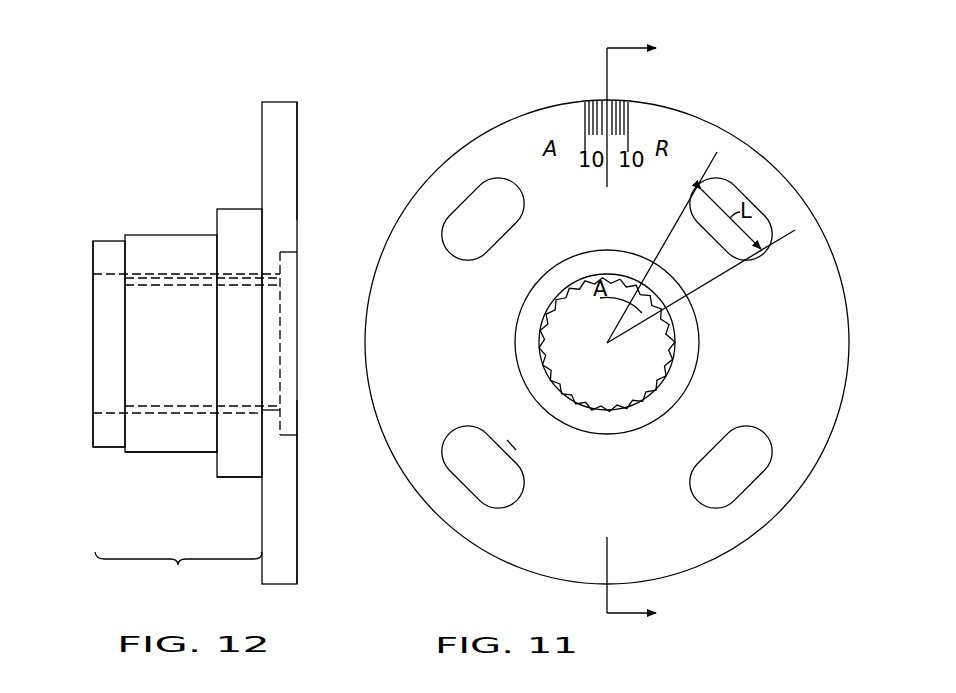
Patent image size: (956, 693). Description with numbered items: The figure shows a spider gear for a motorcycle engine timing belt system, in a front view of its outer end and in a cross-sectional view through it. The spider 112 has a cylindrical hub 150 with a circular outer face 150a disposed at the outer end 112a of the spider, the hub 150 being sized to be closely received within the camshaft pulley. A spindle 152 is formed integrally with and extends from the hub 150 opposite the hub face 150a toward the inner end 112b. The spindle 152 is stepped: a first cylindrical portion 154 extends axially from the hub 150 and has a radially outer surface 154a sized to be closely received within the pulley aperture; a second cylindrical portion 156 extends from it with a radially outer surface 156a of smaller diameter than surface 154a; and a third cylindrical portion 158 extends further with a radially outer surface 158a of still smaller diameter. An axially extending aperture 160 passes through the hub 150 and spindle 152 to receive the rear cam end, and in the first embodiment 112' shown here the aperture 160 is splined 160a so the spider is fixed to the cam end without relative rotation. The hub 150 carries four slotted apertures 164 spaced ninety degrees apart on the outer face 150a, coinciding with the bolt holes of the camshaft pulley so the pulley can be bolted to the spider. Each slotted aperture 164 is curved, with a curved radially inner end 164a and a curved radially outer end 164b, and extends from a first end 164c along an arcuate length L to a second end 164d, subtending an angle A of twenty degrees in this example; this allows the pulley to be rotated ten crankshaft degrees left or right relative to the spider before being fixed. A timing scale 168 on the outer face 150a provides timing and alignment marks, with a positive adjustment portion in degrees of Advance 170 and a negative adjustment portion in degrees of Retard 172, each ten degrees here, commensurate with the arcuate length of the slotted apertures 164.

In FIG. 12, the spider 112 is at (105, 89).
In FIG. 12, the outer end of the spider 112a is at (297, 102).
In FIG. 12, the inner end of the spider 112b is at (95, 240).
In FIG. 11, the first embodiment of the spider gear 112' is at (607, 333).
In FIG. 12, the cylindrical hub 150 is at (275, 101).
In FIG. 12, the circular outer face 150a is at (298, 530).
In FIG. 11, the circular outer face 150a is at (465, 338).
In FIG. 12, the spindle 152 is at (178, 574).
In FIG. 12, the first cylindrical portion 154 is at (240, 208).
In FIG. 12, the radially outer surface of the first cylindrical portion 154a is at (242, 478).
In FIG. 12, the second cylindrical portion 156 is at (177, 234).
In FIG. 12, the radially outer surface of the second cylindrical portion 156a is at (188, 453).
In FIG. 12, the third cylindrical portion 158 is at (110, 240).
In FIG. 12, the radially outer surface of the third cylindrical portion 158a is at (113, 448).
In FIG. 12, the axially extending aperture 160 is at (155, 407).
In FIG. 11, the splines 160a is at (548, 318).
In FIG. 11, the slotted apertures 164 is at (468, 190).
In FIG. 11, the curved radially inner end 164a is at (508, 448).
In FIG. 11, the curved radially outer end 164b is at (467, 492).
In FIG. 11, the first end 164c is at (697, 185).
In FIG. 11, the second end 164d is at (762, 255).
In FIG. 11, the timing scale 168 is at (606, 96).
In FIG. 11, the degrees of Advance 170 is at (597, 100).
In FIG. 11, the degrees of Retard 172 is at (616, 100).